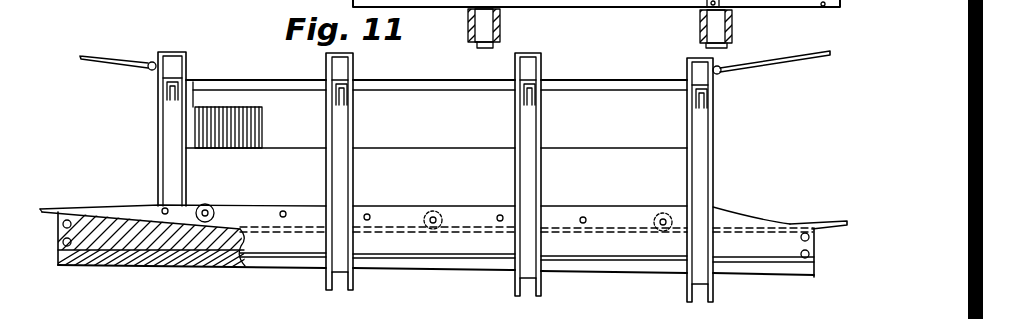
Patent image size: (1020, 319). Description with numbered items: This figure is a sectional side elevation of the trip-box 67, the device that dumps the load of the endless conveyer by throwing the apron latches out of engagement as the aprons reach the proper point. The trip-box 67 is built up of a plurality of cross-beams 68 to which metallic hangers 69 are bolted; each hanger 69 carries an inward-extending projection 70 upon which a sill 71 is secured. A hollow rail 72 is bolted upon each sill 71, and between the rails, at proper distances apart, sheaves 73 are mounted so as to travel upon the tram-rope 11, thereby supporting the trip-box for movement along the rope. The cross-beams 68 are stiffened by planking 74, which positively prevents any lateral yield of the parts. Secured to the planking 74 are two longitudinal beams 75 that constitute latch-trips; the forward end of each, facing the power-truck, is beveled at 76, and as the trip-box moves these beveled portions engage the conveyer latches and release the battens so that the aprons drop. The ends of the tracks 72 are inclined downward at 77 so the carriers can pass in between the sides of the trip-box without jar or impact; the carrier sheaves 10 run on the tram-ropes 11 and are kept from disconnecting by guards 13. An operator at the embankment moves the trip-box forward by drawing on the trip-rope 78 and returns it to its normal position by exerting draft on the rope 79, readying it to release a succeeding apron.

The sheave 10 is at (596, 19).
The tram-rope 11 is at (60, 207).
The guard 13 is at (421, 0).
The trip-box 67 is at (436, 80).
The cross-beam 68 is at (343, 70).
The metallic hanger 69 is at (732, 30).
The inward-extending projection 70 is at (343, 288).
The sill 71 is at (425, 262).
The hollow rail 72 is at (587, 0).
The sheave 73 is at (213, 208).
The planking 74 is at (487, 86).
The longitudinal beam 75 is at (447, 129).
The beveled portion 76 is at (245, 140).
The inclined end 77 is at (112, 206).
The trip-rope 78 is at (788, 63).
The return rope 79 is at (127, 60).